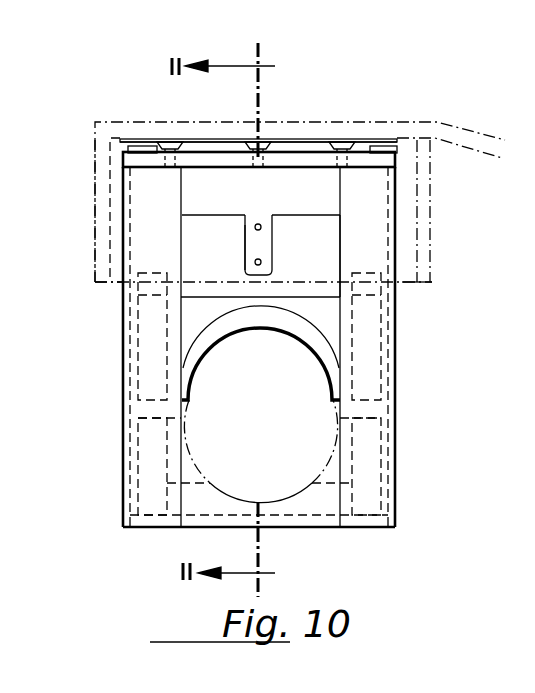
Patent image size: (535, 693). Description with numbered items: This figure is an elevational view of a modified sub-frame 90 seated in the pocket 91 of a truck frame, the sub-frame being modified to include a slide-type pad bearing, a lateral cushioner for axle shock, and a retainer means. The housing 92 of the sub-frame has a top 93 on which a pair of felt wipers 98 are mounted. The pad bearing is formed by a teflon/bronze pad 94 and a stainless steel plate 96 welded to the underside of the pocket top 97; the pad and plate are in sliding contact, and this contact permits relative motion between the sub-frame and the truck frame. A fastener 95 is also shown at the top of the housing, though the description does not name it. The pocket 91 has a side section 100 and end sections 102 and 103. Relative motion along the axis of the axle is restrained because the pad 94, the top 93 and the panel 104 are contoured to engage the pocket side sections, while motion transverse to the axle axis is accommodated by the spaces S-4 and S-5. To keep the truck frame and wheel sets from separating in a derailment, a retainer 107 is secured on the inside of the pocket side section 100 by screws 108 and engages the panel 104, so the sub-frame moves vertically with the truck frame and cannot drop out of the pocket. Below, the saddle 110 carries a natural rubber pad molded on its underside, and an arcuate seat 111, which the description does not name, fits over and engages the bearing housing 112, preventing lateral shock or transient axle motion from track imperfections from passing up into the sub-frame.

The sub-frame 90 is at (122, 332).
The pocket of the truck frame 91 is at (100, 221).
The housing 92 is at (368, 237).
The housing top 93 is at (378, 162).
The teflon/bronze pad 94 is at (212, 147).
The center rivet 95 is at (260, 134).
The stainless steel plate 96 is at (317, 142).
The pocket top 97 is at (160, 127).
The felt wipers 98 is at (150, 146).
The pocket side section 100 is at (402, 284).
The pocket end section 102 is at (108, 176).
The pocket end section 103 is at (425, 159).
The panel 104 is at (300, 198).
The retainer 107 is at (252, 239).
The screws 108 is at (259, 224).
The saddle 110 is at (200, 328).
The arcuate seat 111 is at (205, 340).
The bearing housing 112 is at (313, 455).
The space S-4 is at (115, 278).
The space S-5 is at (407, 237).